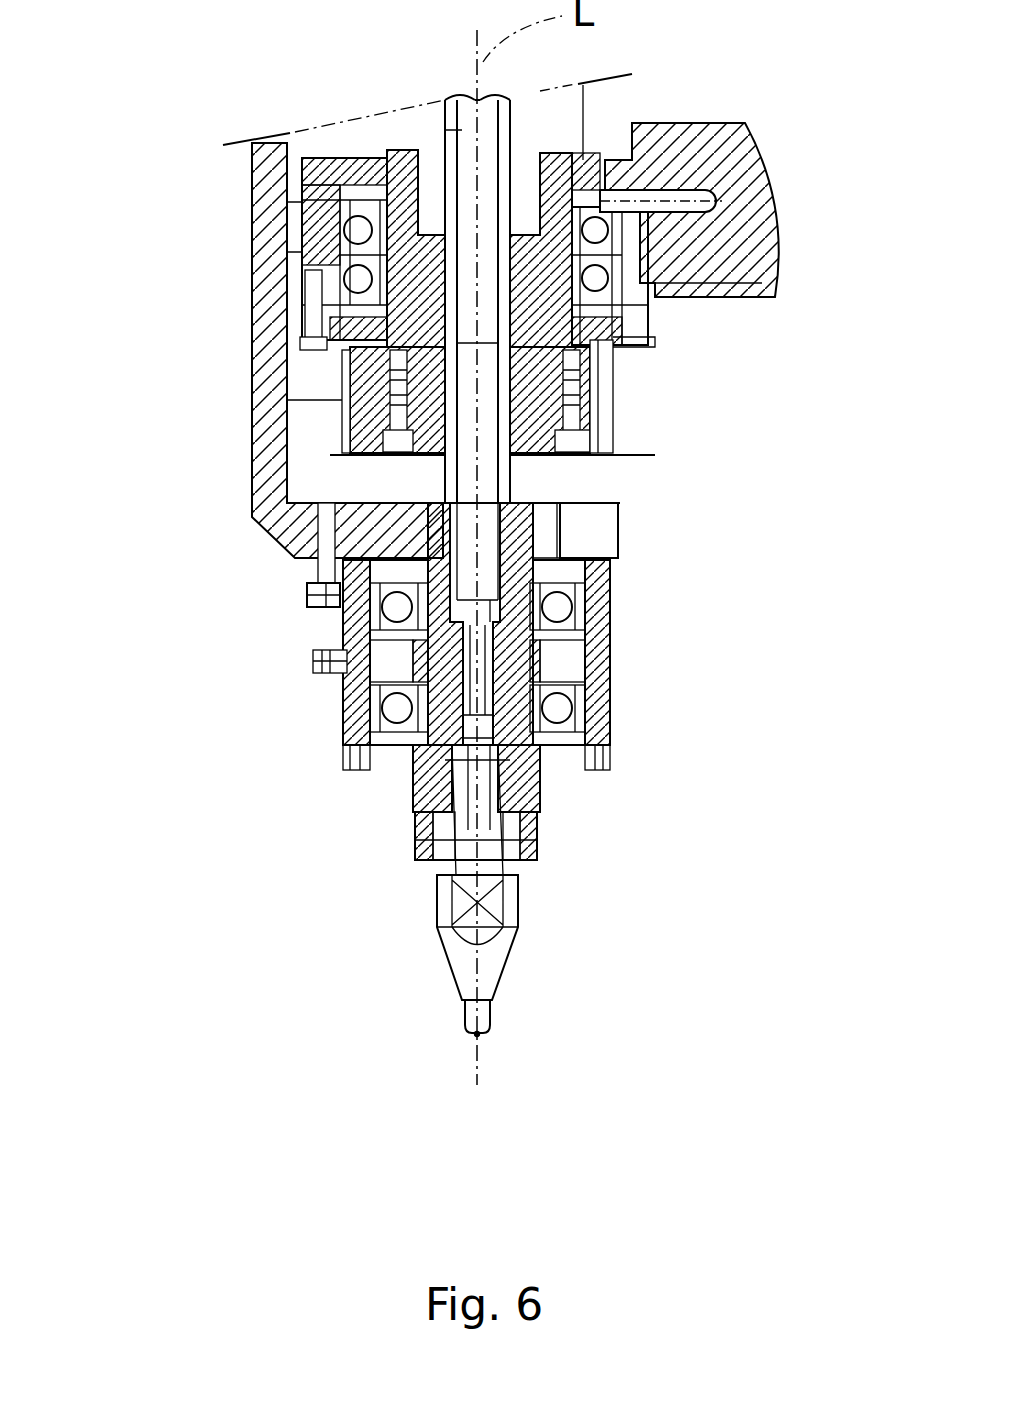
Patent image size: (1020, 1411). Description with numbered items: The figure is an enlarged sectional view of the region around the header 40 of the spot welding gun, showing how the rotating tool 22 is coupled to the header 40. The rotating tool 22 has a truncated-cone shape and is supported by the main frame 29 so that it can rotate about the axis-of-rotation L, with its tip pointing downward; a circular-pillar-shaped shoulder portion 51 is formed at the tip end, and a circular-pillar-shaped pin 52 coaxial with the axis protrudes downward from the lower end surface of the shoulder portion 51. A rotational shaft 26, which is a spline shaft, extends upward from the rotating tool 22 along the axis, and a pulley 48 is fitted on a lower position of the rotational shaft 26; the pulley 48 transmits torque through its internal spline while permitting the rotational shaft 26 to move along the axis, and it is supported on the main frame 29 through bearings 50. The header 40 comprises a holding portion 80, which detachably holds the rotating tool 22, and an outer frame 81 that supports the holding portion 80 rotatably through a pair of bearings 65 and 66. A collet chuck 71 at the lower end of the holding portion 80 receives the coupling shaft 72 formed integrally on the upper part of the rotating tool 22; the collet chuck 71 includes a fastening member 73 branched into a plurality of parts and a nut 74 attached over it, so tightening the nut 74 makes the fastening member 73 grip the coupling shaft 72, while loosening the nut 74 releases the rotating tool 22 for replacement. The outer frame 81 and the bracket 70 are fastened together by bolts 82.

The rotating tool 22 is at (495, 960).
The rotational shaft 26 is at (440, 128).
The main frame 29 is at (680, 150).
The header 40 is at (121, 223).
The pulley 48 is at (345, 402).
The bearings 50 is at (255, 262).
The shoulder portion 51 is at (488, 1015).
The pin 52 is at (478, 1032).
The bearing 65 is at (612, 600).
The bearing 66 is at (612, 695).
The bracket 70 is at (270, 338).
The collet chuck 71 is at (568, 812).
The coupling shaft 72 is at (470, 790).
The fastening member 73 is at (455, 828).
The nut 74 is at (545, 833).
The holding portion 80 is at (612, 648).
The outer frame 81 is at (345, 700).
The bolts 82 is at (305, 585).